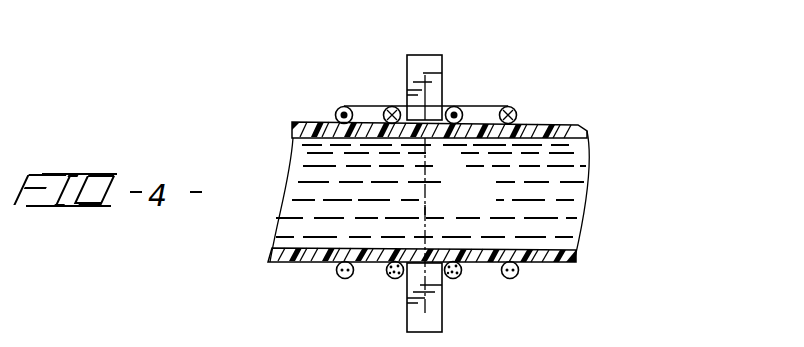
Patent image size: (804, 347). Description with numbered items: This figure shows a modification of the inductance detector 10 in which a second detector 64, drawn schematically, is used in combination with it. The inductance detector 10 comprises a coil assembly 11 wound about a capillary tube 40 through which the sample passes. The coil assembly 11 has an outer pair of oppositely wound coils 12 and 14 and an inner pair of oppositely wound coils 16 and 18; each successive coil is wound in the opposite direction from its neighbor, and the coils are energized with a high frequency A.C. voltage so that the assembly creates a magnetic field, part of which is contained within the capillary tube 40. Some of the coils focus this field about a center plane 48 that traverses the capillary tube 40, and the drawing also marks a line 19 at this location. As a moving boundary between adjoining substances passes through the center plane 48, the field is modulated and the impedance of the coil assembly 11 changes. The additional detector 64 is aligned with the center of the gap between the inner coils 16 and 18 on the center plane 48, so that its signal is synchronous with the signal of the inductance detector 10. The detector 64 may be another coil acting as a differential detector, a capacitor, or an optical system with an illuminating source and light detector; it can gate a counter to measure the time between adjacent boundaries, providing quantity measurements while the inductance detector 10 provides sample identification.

The inductance detector 10 is at (600, 134).
The coil assembly 11 is at (375, 274).
The outer coil 12 is at (337, 108).
The outer coil 14 is at (511, 106).
The inner coil 16 is at (390, 106).
The inner coil 18 is at (456, 106).
The center line 19 is at (461, 176).
The capillary tube 40 is at (565, 125).
The center plane 48 is at (430, 212).
The detector 64 is at (442, 73).